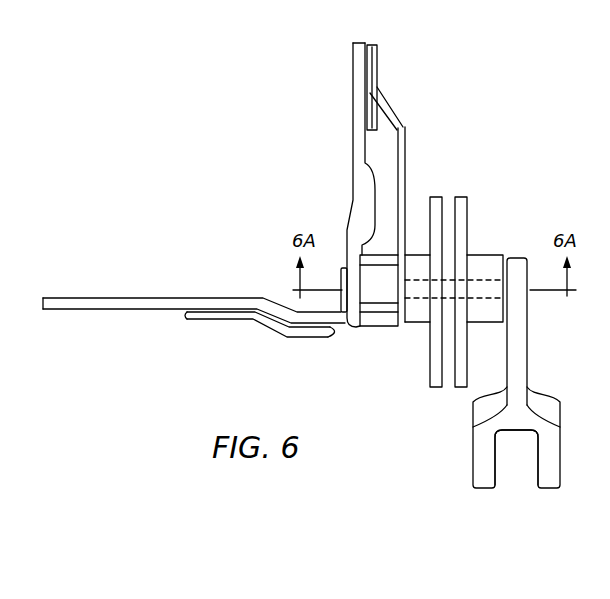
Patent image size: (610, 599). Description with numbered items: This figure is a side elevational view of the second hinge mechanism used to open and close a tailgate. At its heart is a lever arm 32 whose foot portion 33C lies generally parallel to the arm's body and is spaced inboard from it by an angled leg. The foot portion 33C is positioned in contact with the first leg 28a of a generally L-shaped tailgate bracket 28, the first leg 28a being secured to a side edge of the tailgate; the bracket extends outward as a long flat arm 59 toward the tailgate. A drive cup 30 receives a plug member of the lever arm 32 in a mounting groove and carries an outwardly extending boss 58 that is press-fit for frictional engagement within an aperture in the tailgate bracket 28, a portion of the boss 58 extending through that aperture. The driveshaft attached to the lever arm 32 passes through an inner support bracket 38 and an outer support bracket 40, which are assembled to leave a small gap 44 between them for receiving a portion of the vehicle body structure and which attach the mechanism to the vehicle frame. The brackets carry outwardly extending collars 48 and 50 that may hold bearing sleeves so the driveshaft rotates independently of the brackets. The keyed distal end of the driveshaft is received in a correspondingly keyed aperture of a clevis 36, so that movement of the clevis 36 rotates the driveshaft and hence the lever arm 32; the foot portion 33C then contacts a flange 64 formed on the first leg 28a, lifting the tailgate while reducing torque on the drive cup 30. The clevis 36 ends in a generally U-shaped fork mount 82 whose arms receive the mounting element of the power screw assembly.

The tailgate bracket 28 is at (349, 135).
The first leg 28a is at (370, 140).
The drive cup 30 is at (380, 292).
The lever arm 32 is at (403, 102).
The foot portion 33C is at (370, 70).
The clevis 36 is at (517, 328).
The inner support bracket 38 is at (436, 197).
The outer support bracket 40 is at (448, 200).
The gap 44 is at (462, 197).
The collar 48 is at (413, 267).
The collar 50 is at (485, 265).
The boss 58 is at (345, 268).
The arm 59 is at (285, 300).
The flange 64 is at (374, 88).
The fork mount 82 is at (517, 496).